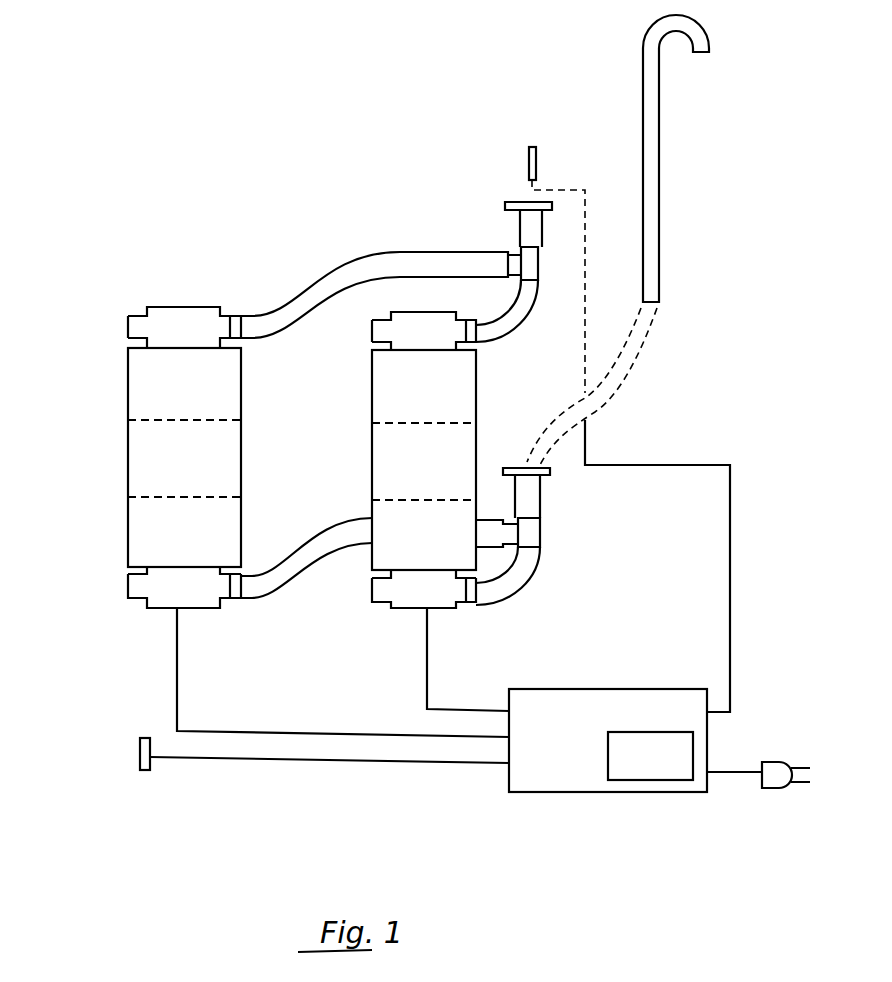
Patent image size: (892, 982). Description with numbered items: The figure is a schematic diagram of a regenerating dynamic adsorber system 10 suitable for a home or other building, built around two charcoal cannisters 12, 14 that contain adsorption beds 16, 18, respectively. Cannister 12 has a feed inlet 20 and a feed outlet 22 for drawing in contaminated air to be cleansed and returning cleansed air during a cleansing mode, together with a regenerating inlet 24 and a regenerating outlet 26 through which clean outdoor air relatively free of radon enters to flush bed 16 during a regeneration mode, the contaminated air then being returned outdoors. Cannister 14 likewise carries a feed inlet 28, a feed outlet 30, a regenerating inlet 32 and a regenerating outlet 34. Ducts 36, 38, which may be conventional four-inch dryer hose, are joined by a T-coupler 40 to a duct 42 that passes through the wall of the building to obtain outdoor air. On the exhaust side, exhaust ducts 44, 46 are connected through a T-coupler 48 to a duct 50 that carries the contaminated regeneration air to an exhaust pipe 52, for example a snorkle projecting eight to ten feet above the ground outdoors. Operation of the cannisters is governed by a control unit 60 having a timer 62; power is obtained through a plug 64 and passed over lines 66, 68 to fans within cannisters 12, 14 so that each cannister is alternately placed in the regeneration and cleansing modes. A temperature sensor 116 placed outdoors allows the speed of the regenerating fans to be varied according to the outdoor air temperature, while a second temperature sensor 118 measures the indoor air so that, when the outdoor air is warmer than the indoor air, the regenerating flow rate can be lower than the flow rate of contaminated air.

The dynamic adsorber system 10 is at (160, 188).
The cannister 12 is at (118, 402).
The cannister 14 is at (366, 406).
The adsorption bed 16 is at (133, 455).
The adsorption bed 18 is at (382, 462).
The feed inlet 20 is at (128, 586).
The feed outlet 22 is at (141, 318).
The regenerating inlet 24 is at (232, 322).
The regenerating outlet 26 is at (231, 600).
The feed inlet 28 is at (372, 590).
The feed outlet 30 is at (374, 325).
The regenerating inlet 32 is at (470, 335).
The regenerating outlet 34 is at (466, 600).
The duct 36 is at (376, 260).
The duct 38 is at (530, 308).
The T-coupler 40 is at (540, 268).
The duct 42 is at (514, 205).
The exhaust duct 44 is at (313, 548).
The exhaust duct 46 is at (525, 582).
The T-coupler 48 is at (540, 530).
The duct 50 is at (535, 492).
The exhaust pipe 52 is at (643, 165).
The control unit 60 is at (650, 689).
The timer 62 is at (652, 732).
The plug 64 is at (782, 762).
The line 66 is at (177, 698).
The line 68 is at (427, 676).
The temperature sensor 116 is at (527, 165).
The temperature sensor 118 is at (141, 742).